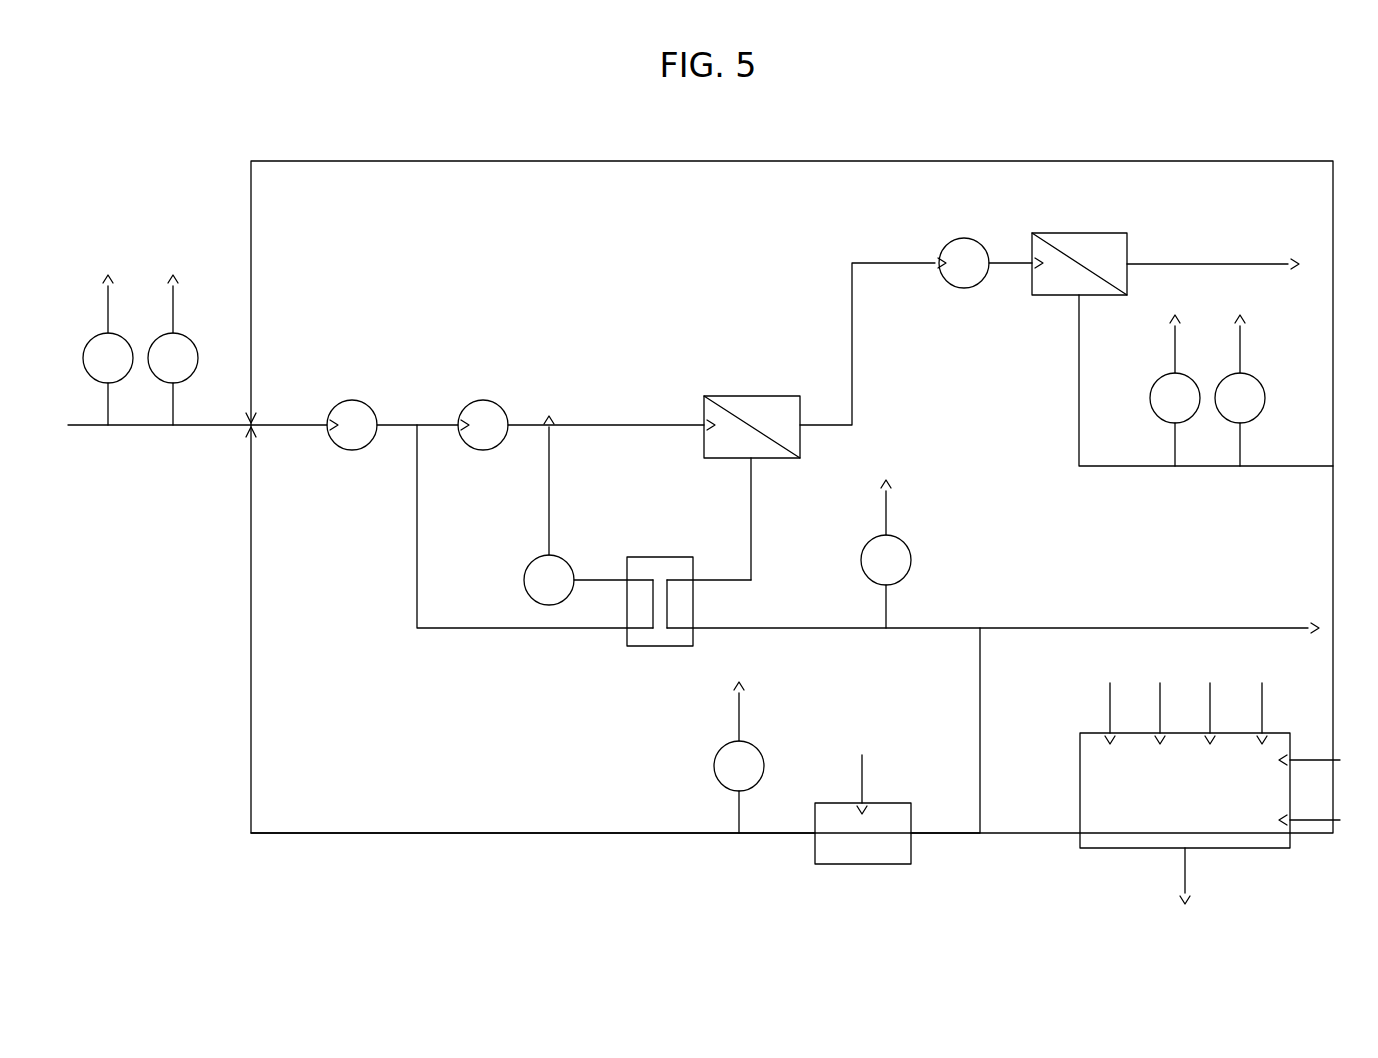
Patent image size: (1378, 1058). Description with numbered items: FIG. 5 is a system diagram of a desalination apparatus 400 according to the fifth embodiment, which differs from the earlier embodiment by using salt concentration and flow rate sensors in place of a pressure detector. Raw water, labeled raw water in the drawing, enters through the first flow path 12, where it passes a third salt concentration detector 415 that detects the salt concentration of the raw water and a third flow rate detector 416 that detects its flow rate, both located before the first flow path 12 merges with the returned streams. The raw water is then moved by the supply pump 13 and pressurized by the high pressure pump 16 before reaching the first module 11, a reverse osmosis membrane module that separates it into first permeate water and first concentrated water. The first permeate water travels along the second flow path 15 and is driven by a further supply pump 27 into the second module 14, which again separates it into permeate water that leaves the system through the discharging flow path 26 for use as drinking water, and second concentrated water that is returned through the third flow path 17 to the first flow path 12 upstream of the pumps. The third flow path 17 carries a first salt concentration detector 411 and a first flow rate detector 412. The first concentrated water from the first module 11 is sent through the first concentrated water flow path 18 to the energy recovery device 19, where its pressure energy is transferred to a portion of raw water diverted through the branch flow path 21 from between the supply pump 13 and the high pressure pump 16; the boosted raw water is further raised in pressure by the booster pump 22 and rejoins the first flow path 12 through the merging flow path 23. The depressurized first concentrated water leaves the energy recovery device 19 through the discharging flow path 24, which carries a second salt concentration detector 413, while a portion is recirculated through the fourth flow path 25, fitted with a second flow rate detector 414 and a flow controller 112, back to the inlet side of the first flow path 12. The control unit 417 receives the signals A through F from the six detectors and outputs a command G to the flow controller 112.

The desalination apparatus 400 is at (1109, 132).
The first flow path 12 is at (290, 423).
The supply pump 13 is at (352, 451).
The high pressure pump 16 is at (483, 451).
The first module 11 is at (745, 396).
The merging flow path 23 is at (552, 494).
The booster pump 22 is at (524, 580).
The first concentrated water flow path 18 is at (754, 520).
The energy recovery device 19 is at (655, 557).
The branch flow path 21 is at (502, 629).
The discharging flow path 24 is at (1125, 628).
The second flow path 15 is at (855, 350).
The supply pump 27 is at (964, 289).
The second module 14 is at (1068, 233).
The discharging flow path 26 is at (1195, 264).
The third flow path 17 is at (1137, 466).
The first salt concentration detector 411 is at (1149, 398).
The first flow rate detector 412 is at (1265, 396).
The second salt concentration detector 413 is at (911, 560).
The second flow rate detector 414 is at (714, 766).
The third salt concentration detector 415 is at (84, 356).
The third flow rate detector 416 is at (198, 356).
The flow controller 112 is at (885, 803).
The fourth flow path 25 is at (493, 832).
The control unit 417 is at (1080, 793).